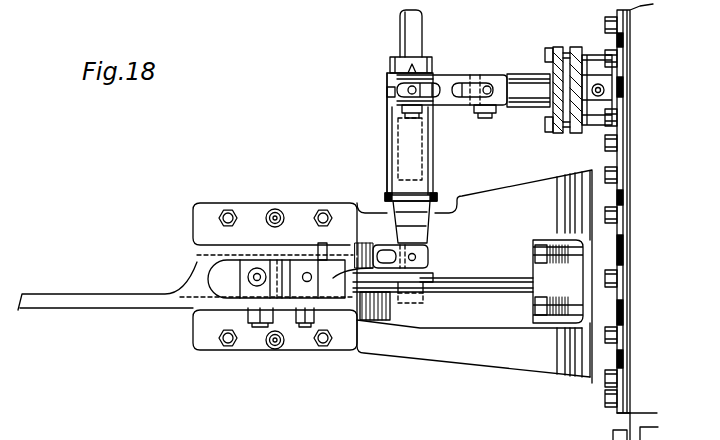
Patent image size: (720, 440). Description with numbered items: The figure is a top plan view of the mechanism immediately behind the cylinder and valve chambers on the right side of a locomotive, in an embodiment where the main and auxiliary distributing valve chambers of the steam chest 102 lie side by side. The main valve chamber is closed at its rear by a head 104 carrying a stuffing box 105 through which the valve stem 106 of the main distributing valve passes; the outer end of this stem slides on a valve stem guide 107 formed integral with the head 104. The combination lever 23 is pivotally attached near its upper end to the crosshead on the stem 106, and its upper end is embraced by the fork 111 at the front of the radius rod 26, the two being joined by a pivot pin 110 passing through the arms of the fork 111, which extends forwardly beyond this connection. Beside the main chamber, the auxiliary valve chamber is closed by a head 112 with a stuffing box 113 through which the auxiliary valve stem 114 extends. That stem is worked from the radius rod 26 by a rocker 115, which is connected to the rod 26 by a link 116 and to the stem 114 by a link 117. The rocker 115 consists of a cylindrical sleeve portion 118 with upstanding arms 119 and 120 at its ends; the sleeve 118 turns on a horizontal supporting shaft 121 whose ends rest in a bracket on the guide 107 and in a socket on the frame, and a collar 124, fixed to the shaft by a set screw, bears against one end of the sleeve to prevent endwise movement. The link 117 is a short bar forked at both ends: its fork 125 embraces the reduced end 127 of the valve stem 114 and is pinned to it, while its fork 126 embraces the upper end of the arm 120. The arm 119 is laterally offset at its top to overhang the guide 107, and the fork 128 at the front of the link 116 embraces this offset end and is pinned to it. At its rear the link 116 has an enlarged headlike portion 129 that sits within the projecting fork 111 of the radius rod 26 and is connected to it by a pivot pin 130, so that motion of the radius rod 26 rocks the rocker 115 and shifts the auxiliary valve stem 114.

The radius rod 26 is at (23, 309).
The combination lever 23 is at (257, 262).
The steam chest 102 is at (642, 430).
The head 104 is at (612, 412).
The stuffing box 105 is at (553, 282).
The valve stem 106 is at (457, 288).
The valve stem guide 107 is at (428, 355).
The pivot pin 110 is at (258, 325).
The fork 111 is at (230, 294).
The head 112 is at (617, 14).
The stuffing box 113 is at (566, 134).
The valve stem 114 is at (528, 108).
The rocker 115 is at (435, 153).
The link 116 is at (340, 262).
The link 117 is at (457, 76).
The cylindrical sleeve portion 118 is at (386, 137).
The arm 119 is at (393, 252).
The arm 120 is at (387, 92).
The supporting shaft 121 is at (400, 22).
The collar 124 is at (390, 60).
The fork 125 is at (497, 78).
The fork 126 is at (428, 72).
The reduced end 127 is at (473, 100).
The fork 128 is at (430, 268).
The headlike portion 129 is at (308, 263).
The pivot pin 130 is at (308, 325).